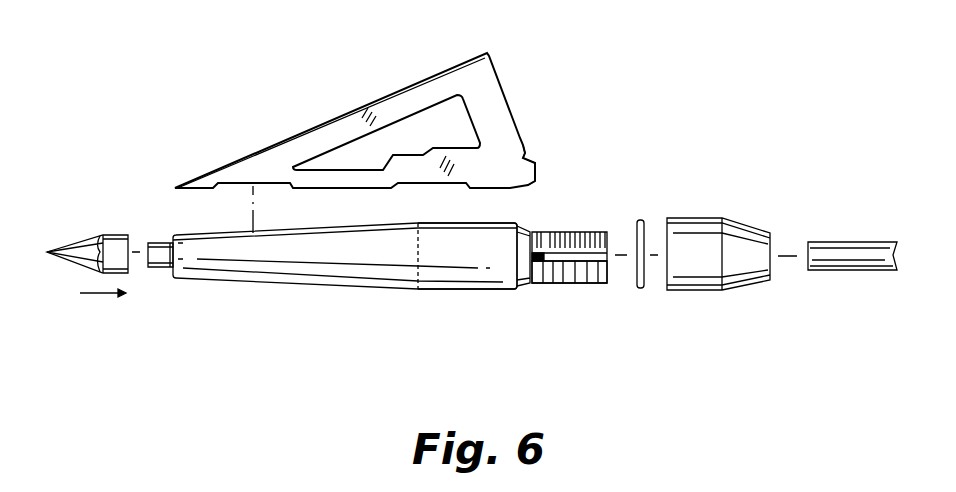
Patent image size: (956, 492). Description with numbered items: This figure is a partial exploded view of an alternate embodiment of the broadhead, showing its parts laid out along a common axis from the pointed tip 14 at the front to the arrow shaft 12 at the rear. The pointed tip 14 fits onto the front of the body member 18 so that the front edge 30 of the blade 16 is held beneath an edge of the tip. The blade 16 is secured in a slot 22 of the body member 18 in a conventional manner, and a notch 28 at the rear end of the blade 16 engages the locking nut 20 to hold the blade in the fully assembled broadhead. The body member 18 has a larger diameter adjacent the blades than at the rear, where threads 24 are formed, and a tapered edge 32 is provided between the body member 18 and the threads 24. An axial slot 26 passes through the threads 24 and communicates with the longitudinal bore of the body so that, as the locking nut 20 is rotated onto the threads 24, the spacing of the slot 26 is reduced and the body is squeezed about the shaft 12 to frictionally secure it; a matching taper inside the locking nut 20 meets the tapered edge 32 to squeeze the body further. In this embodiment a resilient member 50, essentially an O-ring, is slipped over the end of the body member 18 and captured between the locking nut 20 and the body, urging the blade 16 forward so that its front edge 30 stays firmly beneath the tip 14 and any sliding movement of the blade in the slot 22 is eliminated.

The shaft 12 is at (833, 242).
The pointed tip 14 is at (108, 235).
The blade 16 is at (395, 107).
The body member 18 is at (300, 285).
The locking nut 20 is at (708, 293).
The slot 22 is at (480, 285).
The threads 24 is at (590, 231).
The axial slot 26 is at (587, 287).
The notch 28 is at (530, 163).
The front edge 30 is at (175, 185).
The tapered edge 32 is at (525, 226).
The resilient member 50 is at (641, 220).